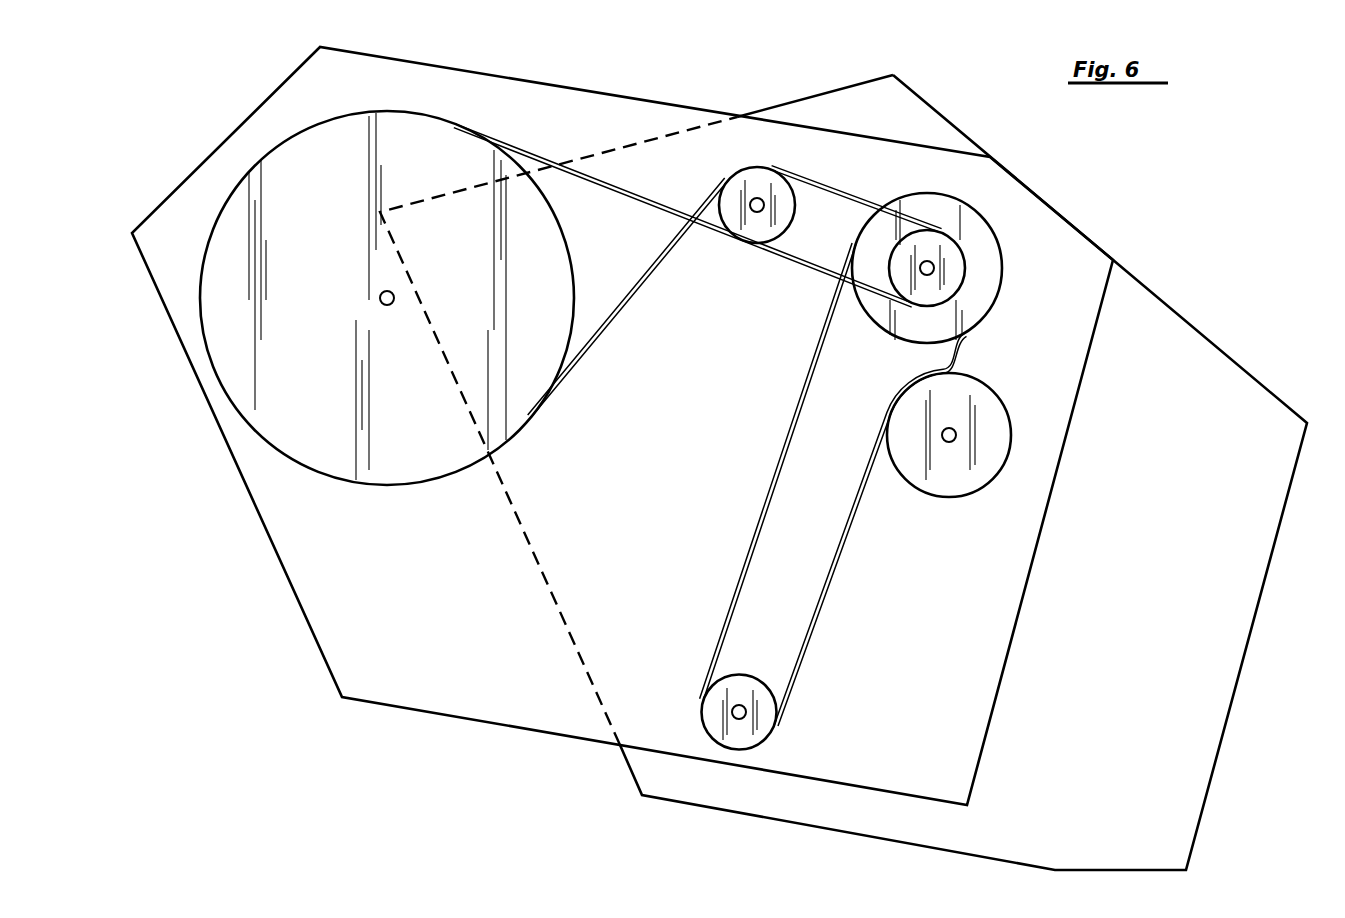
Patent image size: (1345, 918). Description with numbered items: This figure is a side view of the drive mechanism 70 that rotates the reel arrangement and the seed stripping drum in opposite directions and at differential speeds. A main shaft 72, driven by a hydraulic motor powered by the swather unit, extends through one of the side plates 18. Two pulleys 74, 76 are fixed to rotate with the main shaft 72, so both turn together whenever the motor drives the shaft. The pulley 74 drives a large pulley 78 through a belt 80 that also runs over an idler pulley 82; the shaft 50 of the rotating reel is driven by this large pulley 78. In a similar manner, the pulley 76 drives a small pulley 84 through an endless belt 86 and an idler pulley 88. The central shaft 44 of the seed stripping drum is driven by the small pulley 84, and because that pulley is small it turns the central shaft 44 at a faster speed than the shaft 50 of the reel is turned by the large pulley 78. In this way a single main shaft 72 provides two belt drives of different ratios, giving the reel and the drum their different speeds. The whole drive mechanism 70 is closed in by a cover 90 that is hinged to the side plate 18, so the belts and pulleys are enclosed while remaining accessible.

The side plate 18 is at (1287, 508).
The cover 90 is at (1056, 480).
The large pulley 78 is at (515, 402).
The shaft 50 is at (381, 292).
The idler pulley 82 is at (765, 180).
The belt 80 is at (633, 197).
The pulley 76 is at (952, 208).
The pulley 74 is at (952, 255).
The main shaft 72 is at (930, 274).
The idler pulley 88 is at (963, 484).
The small pulley 84 is at (760, 742).
The central shaft 44 is at (732, 712).
The endless belt 86 is at (842, 540).
The drive mechanism 70 is at (1098, 177).